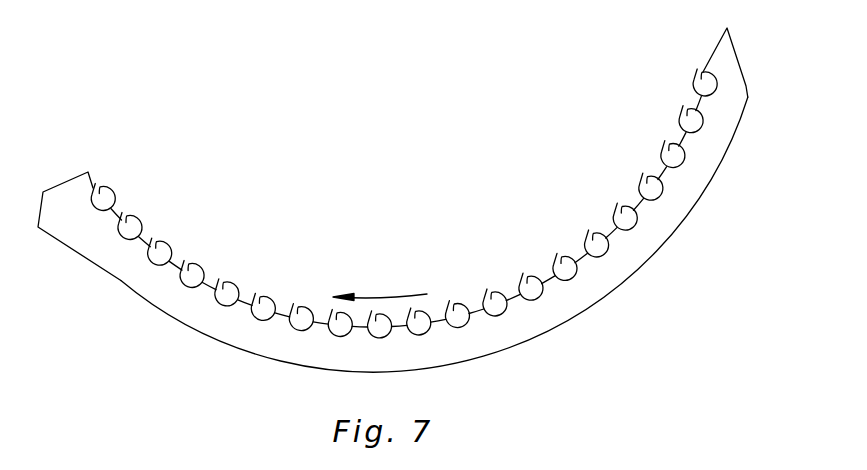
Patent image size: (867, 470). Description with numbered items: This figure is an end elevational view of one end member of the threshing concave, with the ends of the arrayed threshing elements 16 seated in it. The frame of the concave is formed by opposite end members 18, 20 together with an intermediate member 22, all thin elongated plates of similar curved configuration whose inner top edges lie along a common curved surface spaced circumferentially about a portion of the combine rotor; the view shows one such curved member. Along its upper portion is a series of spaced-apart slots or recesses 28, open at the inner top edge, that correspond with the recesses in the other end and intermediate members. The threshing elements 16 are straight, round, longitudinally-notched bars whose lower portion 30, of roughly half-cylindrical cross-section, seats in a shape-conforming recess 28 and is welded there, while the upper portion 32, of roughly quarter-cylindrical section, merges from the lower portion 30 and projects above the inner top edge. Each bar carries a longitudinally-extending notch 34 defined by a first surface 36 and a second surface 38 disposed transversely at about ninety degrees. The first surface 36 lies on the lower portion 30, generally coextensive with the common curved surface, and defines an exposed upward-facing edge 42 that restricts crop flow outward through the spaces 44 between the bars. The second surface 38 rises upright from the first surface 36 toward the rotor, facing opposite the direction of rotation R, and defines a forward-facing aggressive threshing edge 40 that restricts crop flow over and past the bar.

The threshing elements 16 is at (224, 306).
The end member 18 is at (404, 200).
The end member 20 is at (404, 200).
The intermediate member 22 is at (677, 233).
The slots or recesses 28 is at (543, 295).
The lower portion 30 is at (153, 268).
The upper portion 32 is at (159, 240).
The longitudinally-extending notch 34 is at (243, 284).
The first surface 36 is at (170, 252).
The second surface 38 is at (168, 250).
The threshing edge 40 is at (167, 248).
The upward-facing edge 42 is at (167, 264).
The spaces 44 is at (148, 243).
The direction of rotation R is at (379, 296).